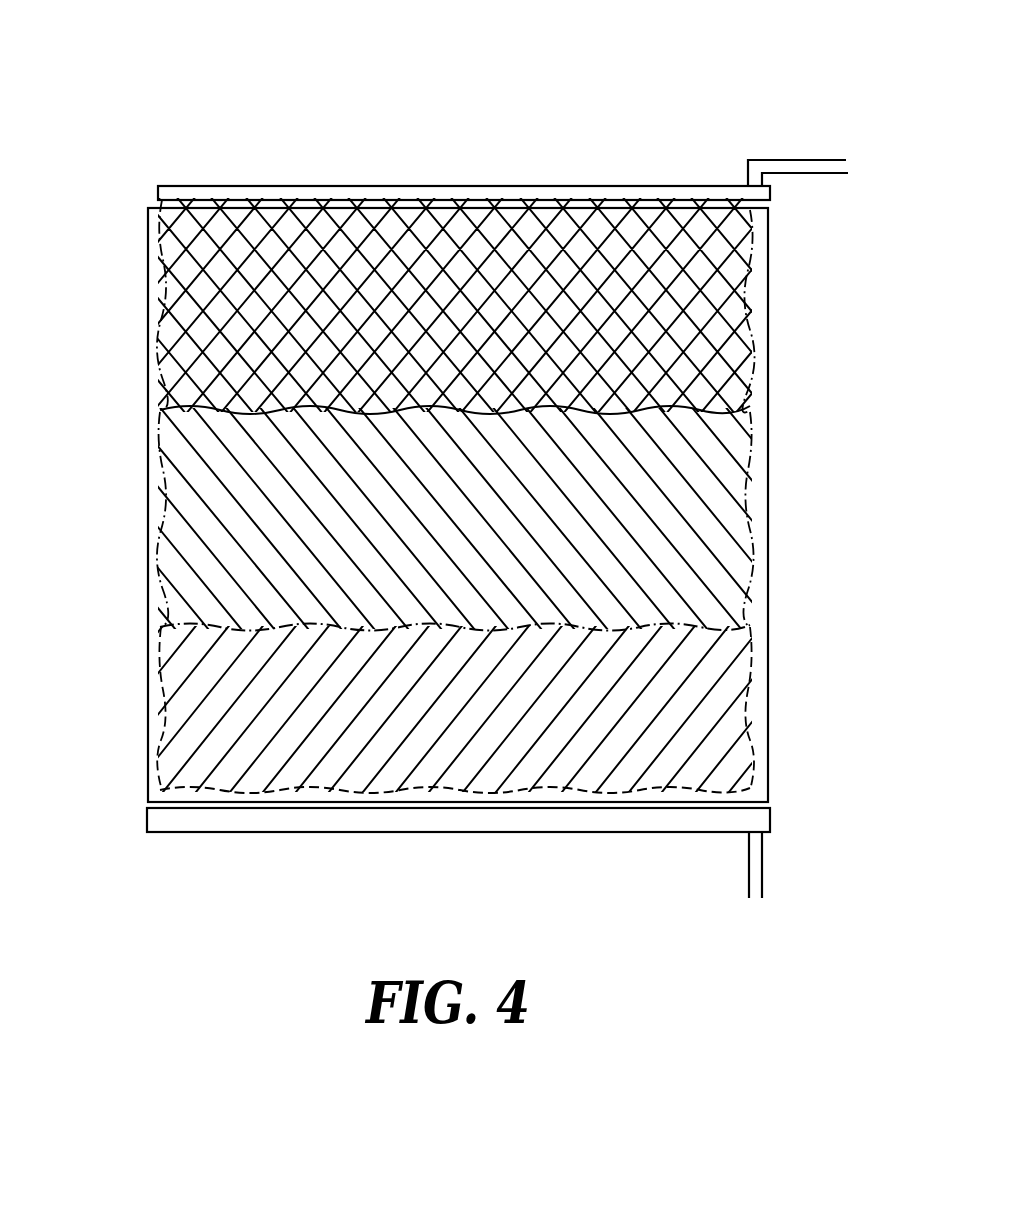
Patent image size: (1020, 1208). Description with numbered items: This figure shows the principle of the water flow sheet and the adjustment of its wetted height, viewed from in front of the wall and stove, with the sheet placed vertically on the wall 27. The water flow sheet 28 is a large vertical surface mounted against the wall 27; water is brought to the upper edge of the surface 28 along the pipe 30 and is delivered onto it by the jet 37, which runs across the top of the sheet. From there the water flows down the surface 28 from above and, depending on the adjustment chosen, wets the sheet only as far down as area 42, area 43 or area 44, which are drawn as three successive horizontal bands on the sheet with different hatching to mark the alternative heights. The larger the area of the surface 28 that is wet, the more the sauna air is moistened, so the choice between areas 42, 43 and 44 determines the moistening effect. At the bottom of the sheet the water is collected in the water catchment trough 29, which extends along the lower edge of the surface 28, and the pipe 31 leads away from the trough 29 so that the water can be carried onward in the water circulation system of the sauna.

The wall 27 is at (552, 80).
The water flow sheet 28 is at (148, 542).
The water catchment trough 29 is at (368, 820).
The pipe 30 is at (810, 160).
The pipe 31 is at (768, 852).
The jet 37 is at (278, 192).
The area 42 is at (712, 332).
The area 43 is at (742, 494).
The area 44 is at (745, 675).